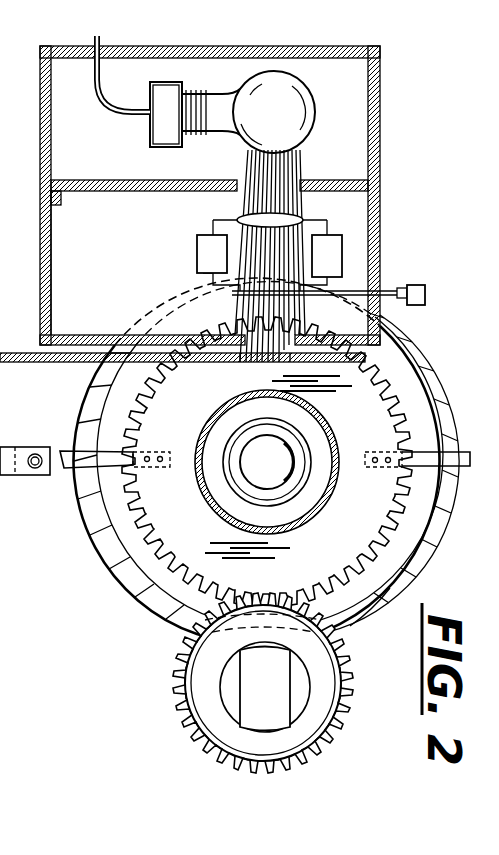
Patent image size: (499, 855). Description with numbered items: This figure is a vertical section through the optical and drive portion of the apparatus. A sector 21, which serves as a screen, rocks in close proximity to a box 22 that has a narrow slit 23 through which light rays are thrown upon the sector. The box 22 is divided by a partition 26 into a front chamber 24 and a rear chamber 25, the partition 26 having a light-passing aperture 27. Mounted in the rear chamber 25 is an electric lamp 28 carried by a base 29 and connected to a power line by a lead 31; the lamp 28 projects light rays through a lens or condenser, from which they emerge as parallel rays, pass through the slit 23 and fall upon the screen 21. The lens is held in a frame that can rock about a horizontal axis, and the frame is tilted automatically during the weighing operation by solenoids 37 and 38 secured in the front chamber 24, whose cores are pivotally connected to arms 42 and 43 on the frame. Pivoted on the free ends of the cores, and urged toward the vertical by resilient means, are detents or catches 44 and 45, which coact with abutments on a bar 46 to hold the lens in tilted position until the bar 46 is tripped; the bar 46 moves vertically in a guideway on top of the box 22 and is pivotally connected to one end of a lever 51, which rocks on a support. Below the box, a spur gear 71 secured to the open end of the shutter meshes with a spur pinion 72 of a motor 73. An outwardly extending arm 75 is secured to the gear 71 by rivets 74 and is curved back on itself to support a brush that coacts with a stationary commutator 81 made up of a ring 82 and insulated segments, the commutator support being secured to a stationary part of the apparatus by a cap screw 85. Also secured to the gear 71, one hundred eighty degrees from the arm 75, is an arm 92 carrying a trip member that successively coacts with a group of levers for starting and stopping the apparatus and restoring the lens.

The sector 21 is at (42, 362).
The box 22 is at (42, 300).
The narrow slit 23 is at (242, 362).
The front chamber 24 is at (55, 258).
The rear chamber 25 is at (60, 115).
The partition 26 is at (132, 192).
The light-passing aperture 27 is at (240, 138).
The electric lamp 28 is at (274, 112).
The base 29 is at (166, 114).
The lead 31 is at (96, 108).
The solenoid 37 is at (327, 256).
The solenoid 38 is at (212, 254).
The arm 42 is at (330, 248).
The arm 43 is at (270, 256).
The detent or catch 44 is at (237, 221).
The detent or catch 45 is at (304, 222).
The bar 46 is at (402, 288).
The lever 51 is at (426, 296).
The spur gear 71 is at (267, 462).
The spur pinion 72 is at (263, 683).
The motor 73 is at (265, 687).
The rivets 74 is at (267, 462).
The arm 75 is at (468, 456).
The stationary commutator 81 is at (433, 540).
The ring 82 is at (370, 617).
The cap screw 85 is at (38, 477).
The arm 92 is at (64, 470).